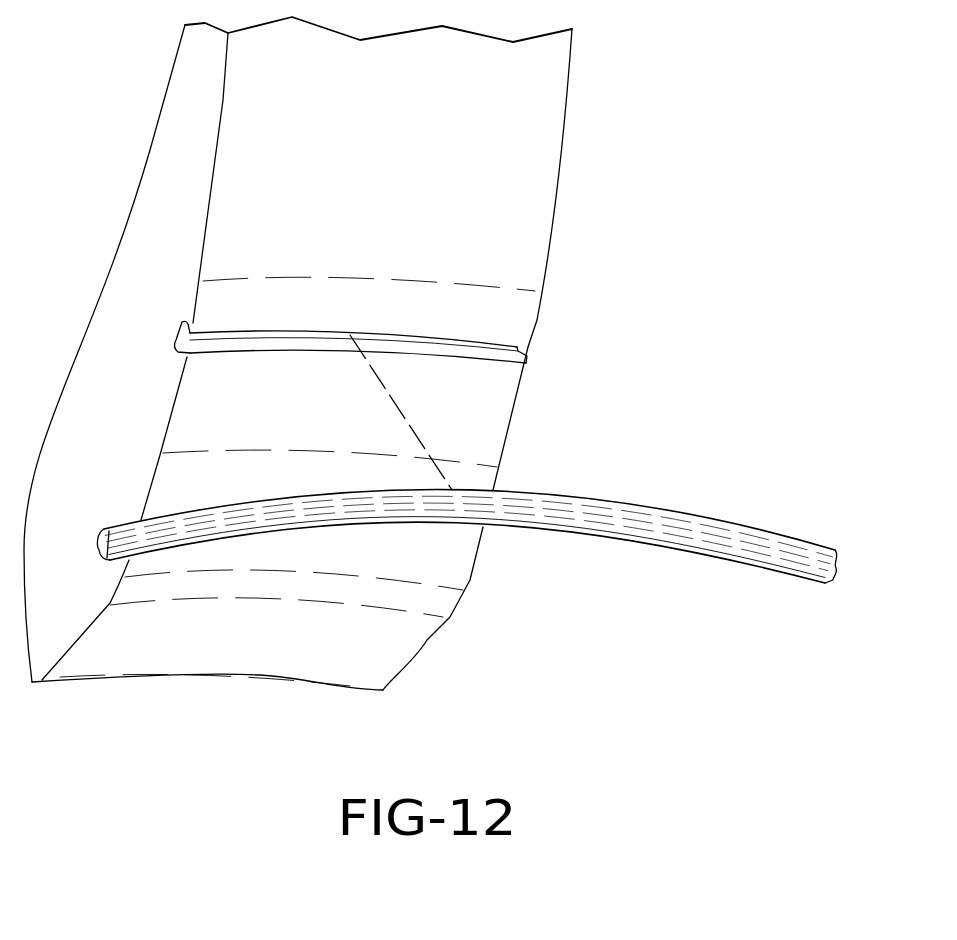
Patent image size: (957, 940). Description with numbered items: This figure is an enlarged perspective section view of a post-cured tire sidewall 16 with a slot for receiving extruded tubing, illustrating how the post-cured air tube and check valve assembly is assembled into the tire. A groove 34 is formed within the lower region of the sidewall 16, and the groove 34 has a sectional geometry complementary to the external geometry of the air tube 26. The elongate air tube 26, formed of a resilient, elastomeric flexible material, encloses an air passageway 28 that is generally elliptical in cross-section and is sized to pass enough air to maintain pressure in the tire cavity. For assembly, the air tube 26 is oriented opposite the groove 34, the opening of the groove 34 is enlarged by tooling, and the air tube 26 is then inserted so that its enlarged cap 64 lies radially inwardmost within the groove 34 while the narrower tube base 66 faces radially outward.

The sidewall 16 is at (485, 155).
The groove 34 is at (483, 355).
The air tube 26 is at (537, 528).
The enlarged cap 64 is at (635, 505).
The air passageway 28 is at (103, 552).
The tube base 66 is at (145, 543).